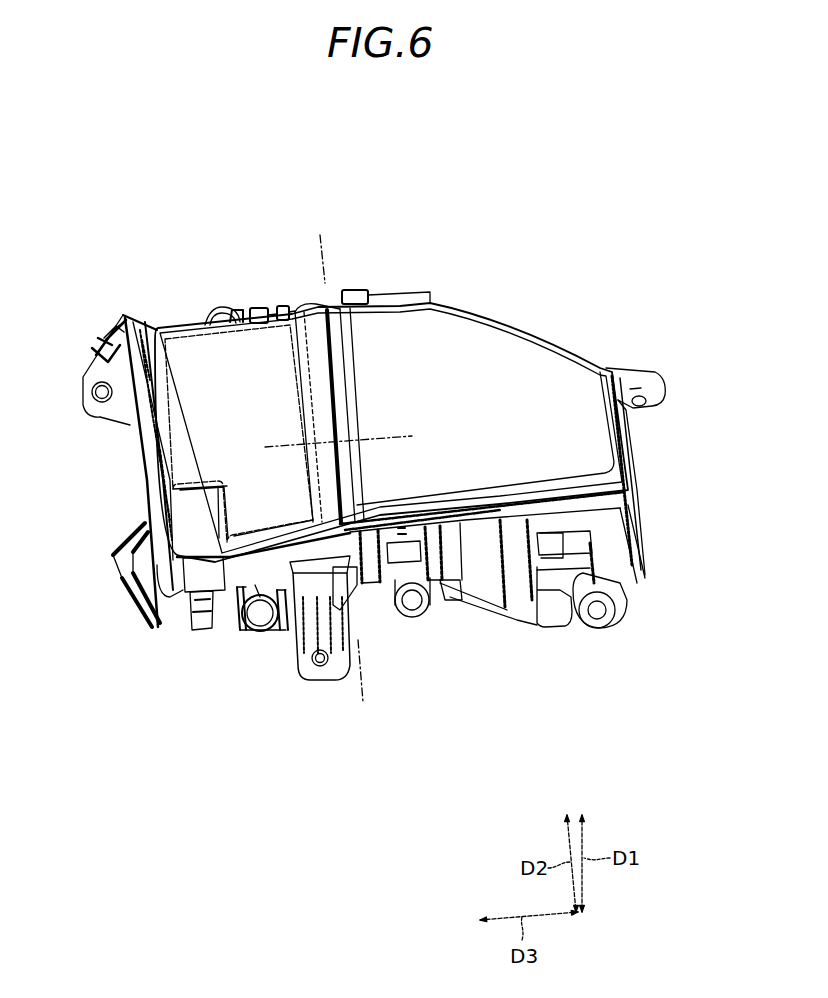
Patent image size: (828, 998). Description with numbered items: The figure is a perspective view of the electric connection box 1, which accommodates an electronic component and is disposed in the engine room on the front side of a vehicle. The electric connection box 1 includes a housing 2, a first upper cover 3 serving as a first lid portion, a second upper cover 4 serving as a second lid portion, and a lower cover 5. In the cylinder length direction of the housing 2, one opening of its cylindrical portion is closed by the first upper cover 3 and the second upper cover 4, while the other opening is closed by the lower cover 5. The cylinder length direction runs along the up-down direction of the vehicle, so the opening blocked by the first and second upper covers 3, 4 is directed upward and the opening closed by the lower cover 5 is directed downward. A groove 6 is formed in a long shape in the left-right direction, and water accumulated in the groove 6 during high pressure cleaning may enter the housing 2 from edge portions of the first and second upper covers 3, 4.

The electric connection box 1 is at (598, 185).
The housing 2 is at (250, 572).
The first upper cover 3 is at (493, 312).
The second upper cover 4 is at (178, 318).
The lower cover 5 is at (552, 633).
The groove 6 is at (320, 375).